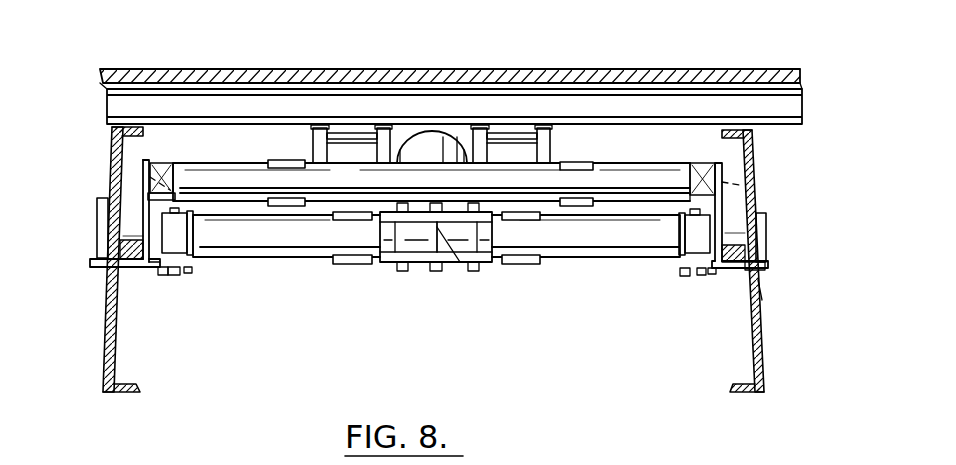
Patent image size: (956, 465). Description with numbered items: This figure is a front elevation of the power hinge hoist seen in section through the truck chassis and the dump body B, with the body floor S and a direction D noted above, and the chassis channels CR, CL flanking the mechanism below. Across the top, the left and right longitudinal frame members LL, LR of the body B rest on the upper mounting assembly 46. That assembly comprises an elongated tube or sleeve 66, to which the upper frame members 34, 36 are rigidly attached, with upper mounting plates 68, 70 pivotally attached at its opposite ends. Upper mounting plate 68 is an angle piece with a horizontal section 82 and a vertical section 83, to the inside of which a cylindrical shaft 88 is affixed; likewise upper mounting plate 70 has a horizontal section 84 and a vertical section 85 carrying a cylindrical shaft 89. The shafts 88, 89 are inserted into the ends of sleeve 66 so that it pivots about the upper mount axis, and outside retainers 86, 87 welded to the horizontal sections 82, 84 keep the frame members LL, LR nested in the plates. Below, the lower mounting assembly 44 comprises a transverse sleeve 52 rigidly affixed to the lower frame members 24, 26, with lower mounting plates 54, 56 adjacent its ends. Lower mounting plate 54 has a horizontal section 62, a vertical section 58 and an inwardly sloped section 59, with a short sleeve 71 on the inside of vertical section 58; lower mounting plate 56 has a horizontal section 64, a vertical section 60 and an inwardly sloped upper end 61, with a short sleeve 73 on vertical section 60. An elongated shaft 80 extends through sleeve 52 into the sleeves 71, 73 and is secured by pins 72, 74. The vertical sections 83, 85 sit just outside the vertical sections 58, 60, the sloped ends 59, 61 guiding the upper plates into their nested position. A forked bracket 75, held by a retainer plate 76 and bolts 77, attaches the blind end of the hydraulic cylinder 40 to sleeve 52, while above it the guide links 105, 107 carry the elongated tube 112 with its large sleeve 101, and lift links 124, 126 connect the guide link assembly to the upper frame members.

The dump body B is at (136, 66).
The support rail S is at (806, 104).
The direction D is at (777, 69).
The right channel CR is at (103, 350).
The left channel CL is at (765, 364).
The right longitudinal frame member LR is at (110, 141).
The left longitudinal frame member LL is at (722, 178).
The upper frame member 36 is at (280, 160).
The upper frame member 34 is at (573, 163).
The cylindrical shaft 89 is at (157, 160).
The inwardly sloped upper end 61 is at (148, 177).
The vertical section 85 is at (153, 193).
The outside retainer 87 is at (105, 207).
The vertical section 60 is at (153, 225).
The horizontal section 84 is at (93, 263).
The upper mounting plate 70 is at (138, 237).
The horizontal section 64 is at (148, 277).
The lower mounting plate 56 is at (162, 280).
The elongated shaft 80 is at (188, 258).
The short sleeve 73 is at (183, 260).
The pin 74 is at (175, 263).
The lower mounting assembly 44 is at (303, 265).
The elongated sleeve or tube 52 is at (653, 260).
The lower frame member 26 is at (350, 265).
The lower frame member 24 is at (520, 265).
The forked bracket 75 is at (417, 265).
The retainer plate 76 is at (450, 262).
The bolts 77 is at (460, 262).
The lift link 126 is at (320, 126).
The guide link 107 is at (383, 128).
The large sleeve 101 is at (452, 130).
The elongated tube 112 is at (342, 132).
The lift link 124 is at (513, 133).
The hydraulic cylinder 40 is at (412, 133).
The guide link 105 is at (480, 130).
The upper mounting assembly 46 is at (646, 158).
The elongated tube or sleeve 66 is at (655, 158).
The cylindrical shaft 88 is at (710, 166).
The outside retainer 86 is at (727, 208).
The inwardly sloped section 59 is at (740, 185).
The vertical section 83 is at (745, 198).
The vertical section 58 is at (730, 233).
The upper mounting plate 68 is at (767, 265).
The horizontal section 82 is at (767, 273).
The horizontal section 62 is at (765, 290).
The lower mounting plate 54 is at (712, 280).
The pin 72 is at (697, 268).
The short sleeve 71 is at (688, 271).